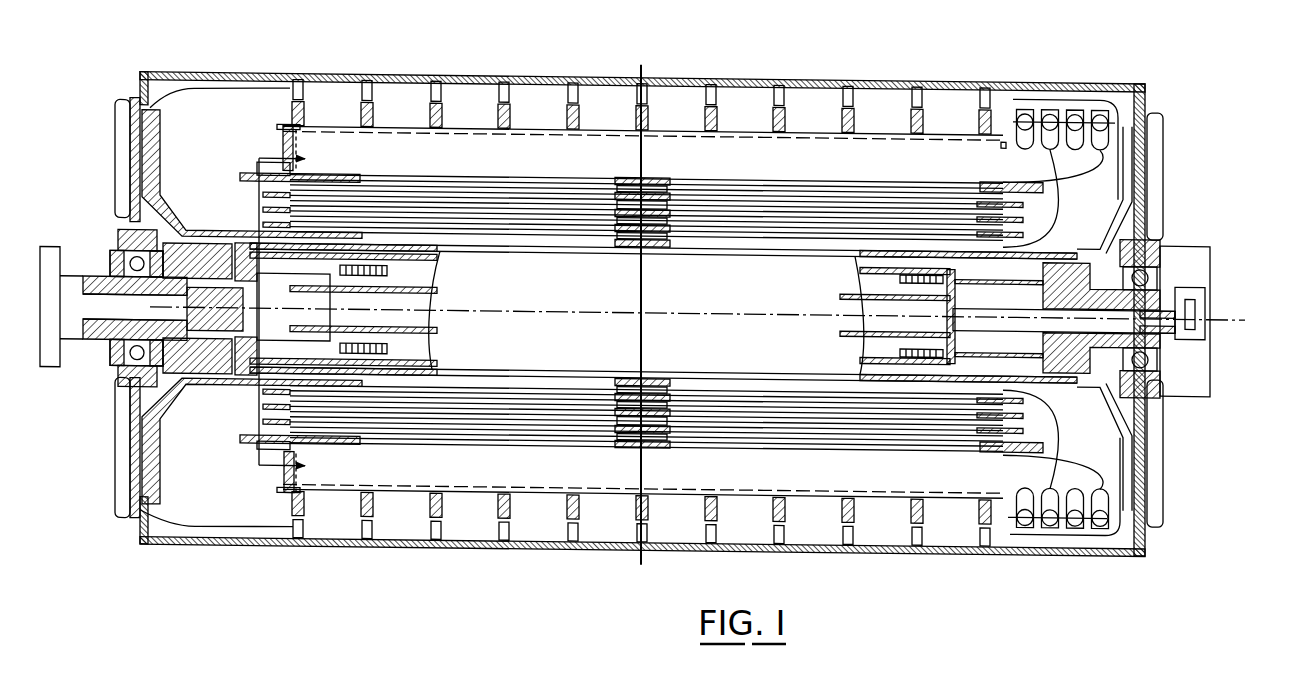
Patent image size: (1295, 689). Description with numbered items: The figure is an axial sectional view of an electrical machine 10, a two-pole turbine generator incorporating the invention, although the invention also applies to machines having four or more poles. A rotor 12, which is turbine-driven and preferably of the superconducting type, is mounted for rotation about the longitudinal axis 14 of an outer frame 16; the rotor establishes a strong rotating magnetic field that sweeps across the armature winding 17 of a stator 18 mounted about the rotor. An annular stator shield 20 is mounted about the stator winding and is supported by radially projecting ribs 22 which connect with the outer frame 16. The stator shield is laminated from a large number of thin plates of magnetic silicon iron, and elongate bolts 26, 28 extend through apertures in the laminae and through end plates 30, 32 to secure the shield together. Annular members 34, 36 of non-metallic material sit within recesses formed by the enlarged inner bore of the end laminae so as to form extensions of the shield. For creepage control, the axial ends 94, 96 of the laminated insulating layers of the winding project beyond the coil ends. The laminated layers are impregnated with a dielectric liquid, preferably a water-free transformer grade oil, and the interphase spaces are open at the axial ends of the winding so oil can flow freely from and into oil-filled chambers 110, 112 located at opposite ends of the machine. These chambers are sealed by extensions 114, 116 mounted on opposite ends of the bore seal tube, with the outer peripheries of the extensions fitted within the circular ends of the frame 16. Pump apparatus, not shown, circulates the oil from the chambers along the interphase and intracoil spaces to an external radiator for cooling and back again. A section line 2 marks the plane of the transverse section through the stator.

The electrical machine 10 is at (786, 70).
The rotor 12 is at (697, 314).
The longitudinal axis 14 is at (1081, 318).
The outer frame 16 is at (642, 314).
The armature winding 17 is at (641, 313).
The stator 18 is at (644, 312).
The stator shield 20 is at (641, 313).
The ribs 22 is at (642, 315).
The bolt 26 is at (1065, 149).
The bolt 28 is at (1064, 485).
The end plate 30 is at (288, 308).
The end plate 32 is at (1031, 319).
The annular member 34 is at (273, 305).
The annular member 36 is at (1053, 319).
The axial end 94 is at (276, 308).
The axial end 96 is at (1000, 318).
The oil-filled chamber 110 is at (251, 307).
The oil-filled chamber 112 is at (1155, 320).
The extension 114 is at (141, 307).
The extension 116 is at (1104, 318).
The section line 2- 2 is at (282, 312).